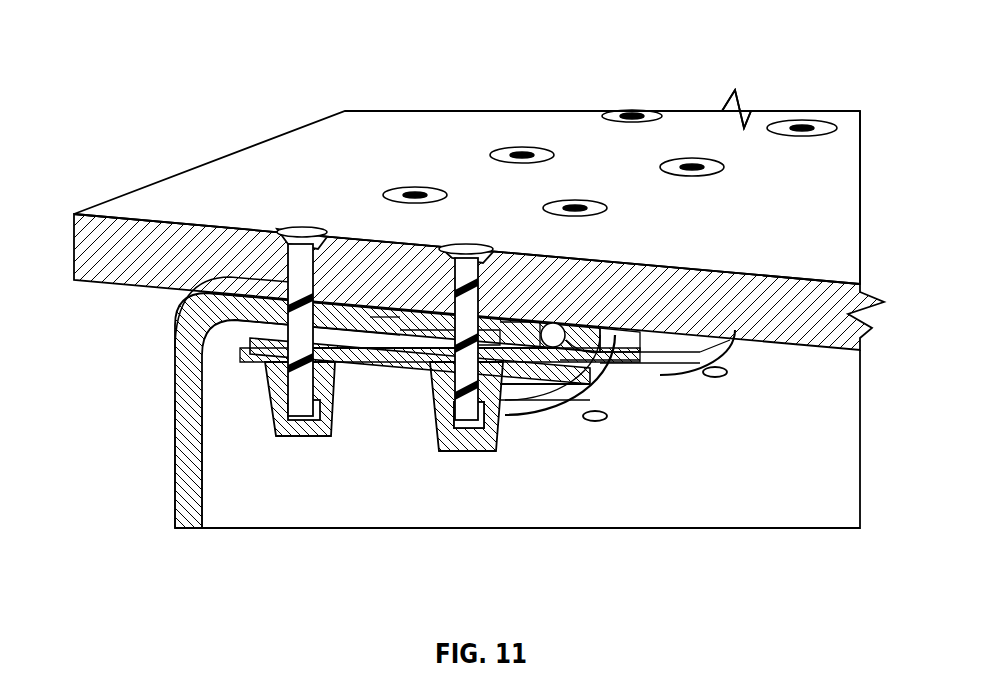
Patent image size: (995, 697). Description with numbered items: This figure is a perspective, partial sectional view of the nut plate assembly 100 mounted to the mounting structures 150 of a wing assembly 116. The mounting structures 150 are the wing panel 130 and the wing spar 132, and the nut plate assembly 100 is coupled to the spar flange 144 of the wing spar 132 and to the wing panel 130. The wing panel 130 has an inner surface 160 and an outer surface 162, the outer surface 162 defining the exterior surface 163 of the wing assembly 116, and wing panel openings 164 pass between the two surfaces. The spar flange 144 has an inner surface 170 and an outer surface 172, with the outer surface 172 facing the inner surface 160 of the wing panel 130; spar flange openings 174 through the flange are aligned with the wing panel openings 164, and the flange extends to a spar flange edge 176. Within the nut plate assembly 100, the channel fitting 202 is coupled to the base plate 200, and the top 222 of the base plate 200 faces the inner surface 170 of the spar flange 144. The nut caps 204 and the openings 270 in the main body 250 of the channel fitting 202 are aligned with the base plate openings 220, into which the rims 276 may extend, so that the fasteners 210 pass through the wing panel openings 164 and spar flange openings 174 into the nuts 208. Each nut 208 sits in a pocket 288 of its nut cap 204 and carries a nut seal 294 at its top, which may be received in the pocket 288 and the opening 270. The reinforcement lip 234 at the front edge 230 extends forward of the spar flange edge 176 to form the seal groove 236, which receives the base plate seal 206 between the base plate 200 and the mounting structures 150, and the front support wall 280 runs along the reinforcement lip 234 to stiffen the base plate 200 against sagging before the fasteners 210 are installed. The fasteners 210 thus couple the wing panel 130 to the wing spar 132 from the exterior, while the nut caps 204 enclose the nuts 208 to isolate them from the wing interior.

The nut plate assembly 100 is at (619, 429).
The wing assembly 116 is at (765, 70).
The wing panel 130 is at (78, 238).
The wing spar 132 is at (180, 518).
The spar flange 144 is at (407, 372).
The mounting structures 150 is at (166, 462).
The inner surface 160 is at (327, 190).
The outer surface 162 is at (240, 185).
The exterior surface 163 is at (872, 163).
The wing panel openings 164 is at (276, 262).
The inner surface 170 is at (264, 360).
The outer surface 172 is at (218, 290).
The spar flange openings 174 is at (243, 340).
The spar flange edge 176 is at (534, 323).
The base plate 200 is at (370, 374).
The channel fitting 202 is at (532, 420).
The nut cap 204 is at (502, 432).
The base plate seal 206 is at (610, 345).
The nut 208 is at (445, 374).
The fasteners 210 is at (300, 228).
The base plate openings 220 is at (498, 337).
The top 222 is at (518, 323).
The front edge 230 is at (648, 340).
The reinforcement lip 234 is at (677, 380).
The seal groove 236 is at (570, 320).
The main body 250 is at (383, 317).
The opening 270 is at (482, 337).
The rim 276 is at (446, 344).
The front support wall 280 is at (615, 348).
The pocket 288 is at (465, 432).
The nut seal 294 is at (561, 424).